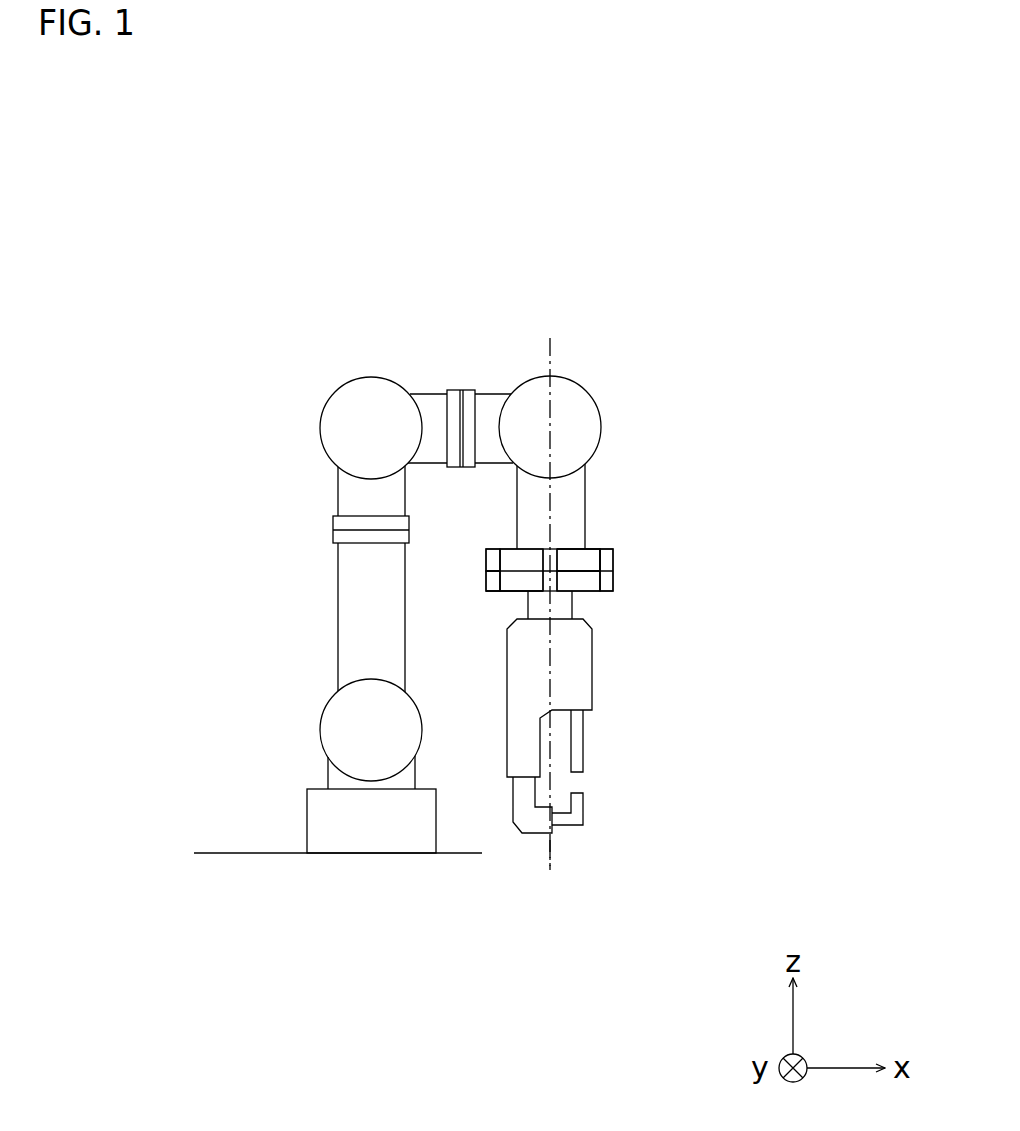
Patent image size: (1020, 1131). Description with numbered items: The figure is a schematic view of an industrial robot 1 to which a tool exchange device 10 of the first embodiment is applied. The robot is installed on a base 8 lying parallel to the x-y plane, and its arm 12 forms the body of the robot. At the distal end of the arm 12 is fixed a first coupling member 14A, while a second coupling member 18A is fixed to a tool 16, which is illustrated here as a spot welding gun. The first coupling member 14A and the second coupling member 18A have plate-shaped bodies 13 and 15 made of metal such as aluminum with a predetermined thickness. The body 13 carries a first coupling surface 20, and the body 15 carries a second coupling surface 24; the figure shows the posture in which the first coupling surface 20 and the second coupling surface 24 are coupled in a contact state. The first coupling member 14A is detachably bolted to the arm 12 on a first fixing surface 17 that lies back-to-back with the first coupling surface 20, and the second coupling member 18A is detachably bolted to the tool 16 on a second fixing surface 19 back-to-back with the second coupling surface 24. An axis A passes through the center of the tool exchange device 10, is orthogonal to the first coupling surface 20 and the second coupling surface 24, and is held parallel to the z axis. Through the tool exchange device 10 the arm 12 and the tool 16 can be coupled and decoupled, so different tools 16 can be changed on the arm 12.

The industrial robot 1 is at (302, 297).
The base 8 is at (233, 853).
The tool exchange device 10 is at (632, 585).
The arm 12 is at (527, 316).
The body 13 is at (597, 560).
The first coupling member 14A is at (485, 557).
The body 15 is at (597, 583).
The tool 16 is at (603, 692).
The first fixing surface 17 is at (592, 548).
The second coupling member 18A is at (482, 580).
The second fixing surface 19 is at (507, 592).
The first coupling surface 20 is at (538, 570).
The second coupling surface 24 is at (566, 568).
The axis A is at (556, 862).